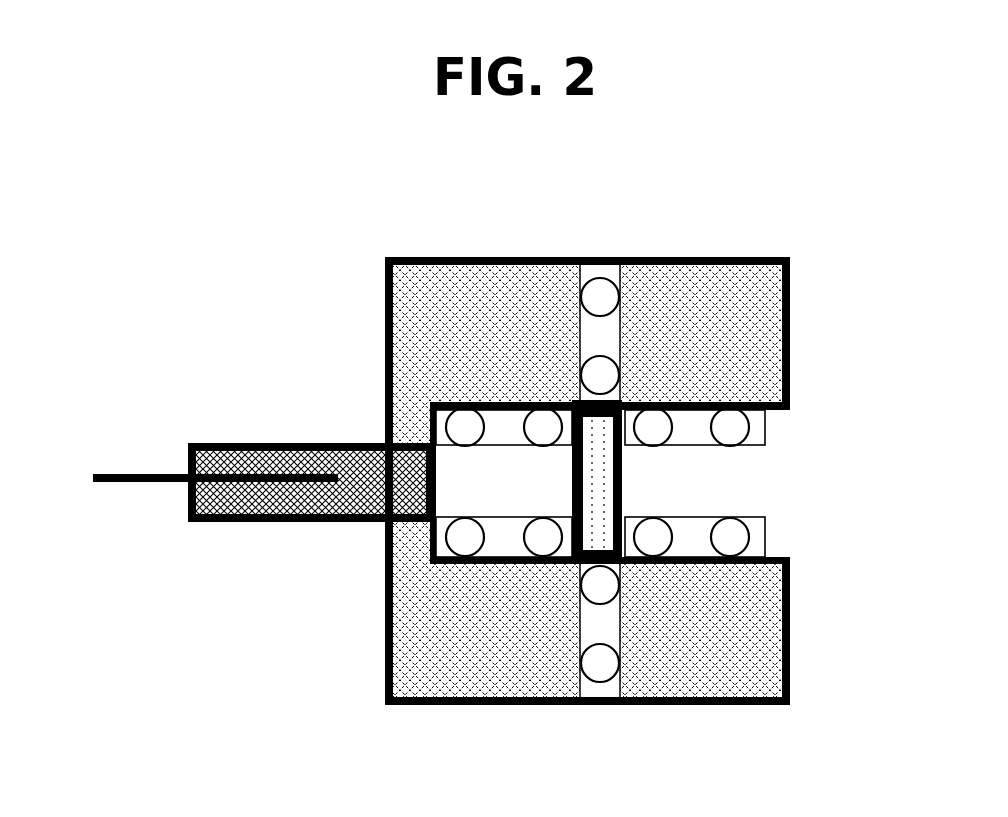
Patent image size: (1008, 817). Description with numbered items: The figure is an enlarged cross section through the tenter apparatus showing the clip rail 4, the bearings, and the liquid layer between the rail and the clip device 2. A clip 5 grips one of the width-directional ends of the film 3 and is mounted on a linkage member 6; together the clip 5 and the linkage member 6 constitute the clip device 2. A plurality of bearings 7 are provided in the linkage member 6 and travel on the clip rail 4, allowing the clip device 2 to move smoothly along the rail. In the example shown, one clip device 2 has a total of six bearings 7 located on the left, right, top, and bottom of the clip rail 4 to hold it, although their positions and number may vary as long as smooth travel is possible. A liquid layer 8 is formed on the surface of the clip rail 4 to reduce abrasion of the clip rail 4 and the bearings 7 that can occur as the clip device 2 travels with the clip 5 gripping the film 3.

The clip device 2 is at (283, 192).
The film 3 is at (165, 473).
The clip rail 4 is at (623, 458).
The clip 5 is at (268, 445).
The linkage member 6 is at (487, 300).
The bearings 7 is at (692, 530).
The liquid layer 8 is at (565, 540).